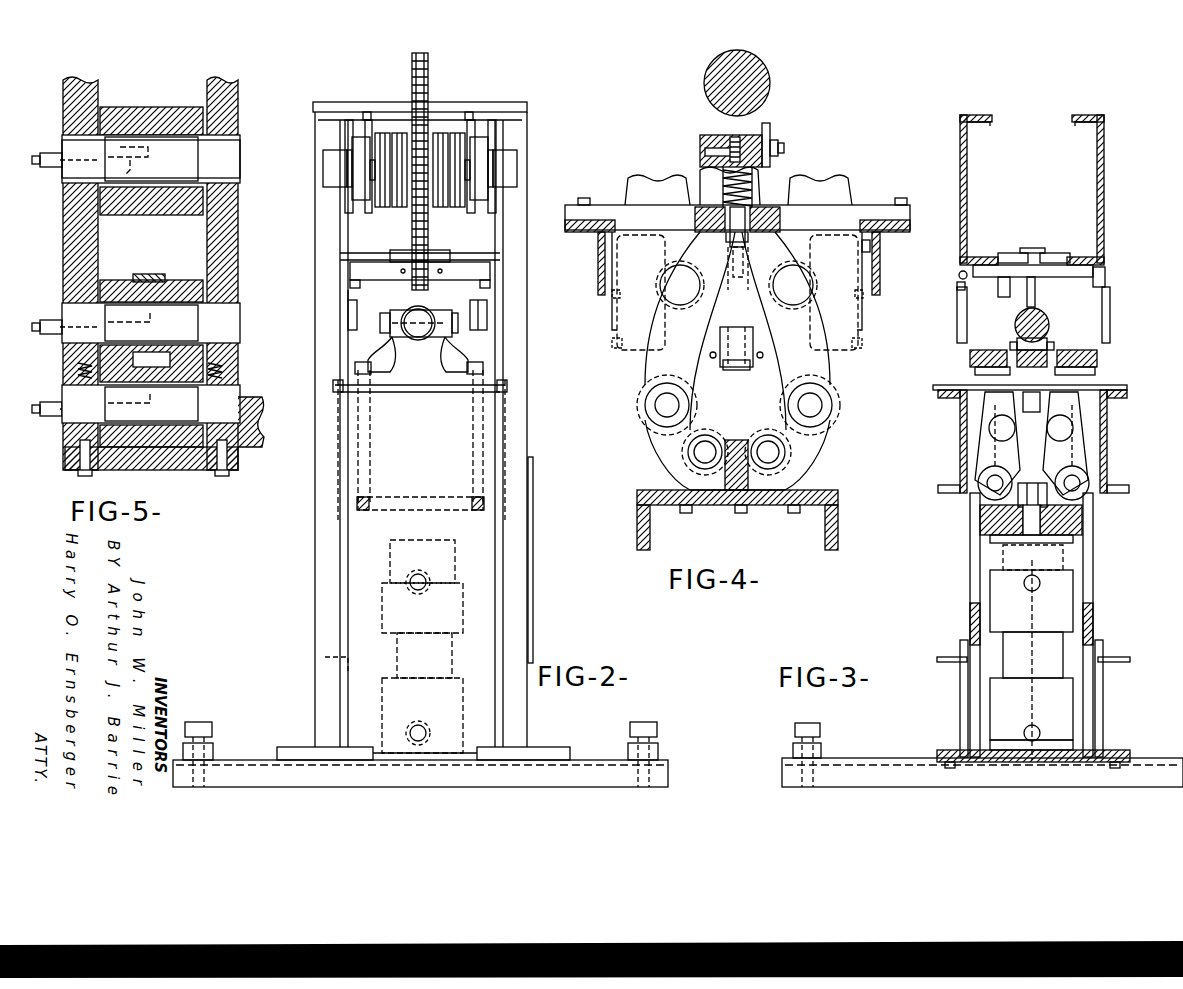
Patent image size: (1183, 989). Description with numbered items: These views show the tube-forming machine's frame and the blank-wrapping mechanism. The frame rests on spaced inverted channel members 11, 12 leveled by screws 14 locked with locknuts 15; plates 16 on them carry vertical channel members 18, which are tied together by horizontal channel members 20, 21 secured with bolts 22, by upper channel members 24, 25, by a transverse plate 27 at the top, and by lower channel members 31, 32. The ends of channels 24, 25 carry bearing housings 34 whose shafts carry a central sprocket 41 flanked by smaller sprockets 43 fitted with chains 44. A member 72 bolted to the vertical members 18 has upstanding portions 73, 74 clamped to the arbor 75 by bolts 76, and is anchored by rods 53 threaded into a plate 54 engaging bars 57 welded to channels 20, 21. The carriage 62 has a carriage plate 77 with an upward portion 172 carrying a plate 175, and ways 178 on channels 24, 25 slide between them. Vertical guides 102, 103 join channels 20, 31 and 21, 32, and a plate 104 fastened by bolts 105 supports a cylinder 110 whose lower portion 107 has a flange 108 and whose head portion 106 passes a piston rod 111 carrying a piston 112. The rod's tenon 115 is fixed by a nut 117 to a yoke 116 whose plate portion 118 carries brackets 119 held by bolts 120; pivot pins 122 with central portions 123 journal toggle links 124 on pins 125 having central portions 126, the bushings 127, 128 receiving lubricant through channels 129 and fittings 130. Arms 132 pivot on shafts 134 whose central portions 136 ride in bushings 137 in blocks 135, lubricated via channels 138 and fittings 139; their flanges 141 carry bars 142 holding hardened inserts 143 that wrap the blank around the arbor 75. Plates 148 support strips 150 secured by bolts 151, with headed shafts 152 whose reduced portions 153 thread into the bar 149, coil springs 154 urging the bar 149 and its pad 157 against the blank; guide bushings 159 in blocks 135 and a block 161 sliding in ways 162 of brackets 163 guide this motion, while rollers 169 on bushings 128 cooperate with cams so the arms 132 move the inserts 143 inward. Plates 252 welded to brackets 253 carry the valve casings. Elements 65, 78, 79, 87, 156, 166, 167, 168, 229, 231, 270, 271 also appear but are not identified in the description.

In FIG. 2, the inverted channel member 11 is at (668, 764).
In FIG. 3, the inverted channel member 12 is at (838, 787).
In FIG. 2, the screws 14 is at (212, 730).
In FIG. 3, the screws 14 is at (812, 725).
In FIG. 2, the locknuts 15 is at (214, 750).
In FIG. 3, the locknuts 15 is at (821, 750).
In FIG. 2, the plates 16 is at (530, 760).
In FIG. 2, the vertical channel member 18 is at (317, 578).
In FIG. 2, the horizontal channel member 20 is at (505, 490).
In FIG. 3, the horizontal channel member 20 is at (1118, 494).
In FIG. 2, the horizontal channel member 21 is at (340, 500).
In FIG. 3, the horizontal channel member 21 is at (945, 493).
In FIG. 2, the bolts 22 is at (335, 480).
In FIG. 2, the horizontal channel member 24 is at (497, 220).
In FIG. 3, the horizontal channel member 24 is at (1104, 156).
In FIG. 2, the horizontal channel member 25 is at (352, 245).
In FIG. 3, the horizontal channel member 25 is at (960, 151).
In FIG. 2, the transverse plate 27 is at (455, 103).
In FIG. 2, the horizontal channel member 31 is at (495, 715).
In FIG. 3, the horizontal channel member 31 is at (1103, 684).
In FIG. 2, the horizontal channel member 32 is at (345, 690).
In FIG. 3, the horizontal channel member 32 is at (960, 680).
In FIG. 2, the bearing retaining housing 34 is at (360, 145).
In FIG. 2, the sprocket 41 is at (410, 78).
In FIG. 2, the sprockets 43 is at (380, 210).
In FIG. 2, the chains 44 is at (400, 190).
In FIG. 2, the rods 53 is at (473, 466).
In FIG. 2, the plate 54 is at (375, 510).
In FIG. 2, the bars 57 is at (335, 500).
In FIG. 3, the carriage 62 is at (1105, 288).
In FIG. 3, the rod 65 is at (1035, 290).
In FIG. 2, the member 72 is at (438, 363).
In FIG. 2, the upwardly extending portion 73 is at (395, 310).
In FIG. 2, the upwardly extending portion 74 is at (435, 310).
In FIG. 2, the arbor 75 is at (398, 345).
In FIG. 4, the arbor 75 is at (762, 70).
In FIG. 3, the arbor 75 is at (1049, 320).
In FIG. 2, the bolts 76 is at (460, 318).
In FIG. 2, the carriage plate 77 is at (352, 284).
In FIG. 3, the carriage plate 77 is at (1093, 270).
In FIG. 2, the plate 78 is at (490, 284).
In FIG. 2, the bracket 79 is at (348, 300).
In FIG. 2, the bracket 87 is at (487, 326).
In FIG. 3, the vertical guide 102 is at (970, 548).
In FIG. 3, the vertical guide 103 is at (1093, 565).
In FIG. 3, the plate 104 is at (1068, 762).
In FIG. 3, the bolts 105 is at (945, 766).
In FIG. 3, the head portion 106 is at (1005, 578).
In FIG. 3, the lower portion 107 is at (1073, 720).
In FIG. 3, the flange 108 is at (990, 744).
In FIG. 3, the cylinder 110 is at (1066, 648).
In FIG. 3, the piston rod 111 is at (1075, 583).
In FIG. 3, the piston 112 is at (980, 700).
In FIG. 3, the tenon 115 is at (1082, 520).
In FIG. 4, the yoke 116 is at (838, 526).
In FIG. 3, the yoke 116 is at (980, 520).
In FIG. 3, the nut 117 is at (1090, 483).
In FIG. 5, the plate portion 118 is at (204, 468).
In FIG. 4, the plate portion 118 is at (748, 506).
In FIG. 3, the plate portion 118 is at (1073, 540).
In FIG. 5, the brackets 119 is at (70, 440).
In FIG. 4, the brackets 119 is at (680, 472).
In FIG. 5, the bolts 120 is at (82, 472).
In FIG. 4, the bolts 120 is at (686, 513).
In FIG. 5, the pivot pins 122 is at (230, 398).
In FIG. 4, the pivot pins 122 is at (688, 452).
In FIG. 5, the central portion 123 is at (78, 372).
In FIG. 4, the central portion 123 is at (790, 455).
In FIG. 5, the toggle links 124 is at (200, 362).
In FIG. 4, the toggle links 124 is at (758, 420).
In FIG. 3, the toggle links 124 is at (1048, 485).
In FIG. 5, the pins 125 is at (70, 280).
In FIG. 4, the pins 125 is at (647, 406).
In FIG. 3, the pins 125 is at (980, 482).
In FIG. 5, the enlarged central portion 126 is at (185, 283).
In FIG. 4, the enlarged central portion 126 is at (648, 432).
In FIG. 5, the bearing bushing 127 is at (140, 410).
In FIG. 5, the bearing bushing 128 is at (120, 282).
In FIG. 5, the lubricant channels 129 is at (150, 325).
In FIG. 5, the fittings 130 is at (52, 334).
In FIG. 5, the clamping arms 132 is at (66, 205).
In FIG. 4, the clamping arms 132 is at (648, 352).
In FIG. 3, the clamping arms 132 is at (990, 430).
In FIG. 5, the shafts 134 is at (215, 138).
In FIG. 4, the shafts 134 is at (665, 290).
In FIG. 3, the shafts 134 is at (990, 428).
In FIG. 5, the blocks 135 is at (142, 108).
In FIG. 4, the blocks 135 is at (860, 332).
In FIG. 3, the blocks 135 is at (1060, 400).
In FIG. 5, the central portion 136 is at (138, 90).
In FIG. 4, the central portion 136 is at (617, 334).
In FIG. 5, the bearing bushings 137 is at (176, 110).
In FIG. 5, the channels 138 is at (128, 170).
In FIG. 5, the lubricant fittings 139 is at (50, 153).
In FIG. 3, the flanges 141 is at (975, 372).
In FIG. 3, the bars 142 is at (970, 357).
In FIG. 3, the hardened inserts 143 is at (1017, 345).
In FIG. 4, the plates 148 is at (572, 228).
In FIG. 3, the plates 148 is at (1127, 394).
In FIG. 4, the bar 149 is at (703, 140).
In FIG. 3, the bar 149 is at (1044, 326).
In FIG. 4, the strips 150 is at (870, 208).
In FIG. 3, the strips 150 is at (950, 388).
In FIG. 4, the bolts 151 is at (575, 205).
In FIG. 4, the headed shafts 152 is at (748, 240).
In FIG. 4, the reduced portions 153 is at (700, 160).
In FIG. 4, the coil springs 154 is at (760, 185).
In FIG. 4, the thread 156 is at (720, 275).
In FIG. 4, the hardened pad 157 is at (728, 140).
In FIG. 3, the hardened pad 157 is at (1020, 327).
In FIG. 4, the guide bushings 159 is at (725, 238).
In FIG. 4, the block 161 is at (753, 342).
In FIG. 4, the ways 162 is at (722, 372).
In FIG. 4, the brackets 163 is at (872, 255).
In FIG. 4, the nut 166 is at (774, 143).
In FIG. 3, the nut 166 is at (1054, 373).
In FIG. 4, the screw 167 is at (784, 148).
In FIG. 3, the screw 167 is at (1022, 373).
In FIG. 4, the bracket 168 is at (768, 125).
In FIG. 5, the cam followers 169 is at (138, 282).
In FIG. 4, the cam followers 169 is at (655, 422).
In FIG. 3, the upwardly projecting portion 172 is at (1004, 297).
In FIG. 2, the plate 175 is at (450, 255).
In FIG. 3, the plate 175 is at (1075, 234).
In FIG. 2, the ways 178 is at (490, 268).
In FIG. 3, the ways 178 is at (1018, 240).
In FIG. 2, the pin 229 is at (432, 578).
In FIG. 2, the pin 231 is at (418, 745).
In FIG. 2, the plates 252 is at (535, 610).
In FIG. 2, the brackets 253 is at (505, 502).
In FIG. 3, the pivot 270 is at (958, 276).
In FIG. 3, the bracket 271 is at (957, 290).